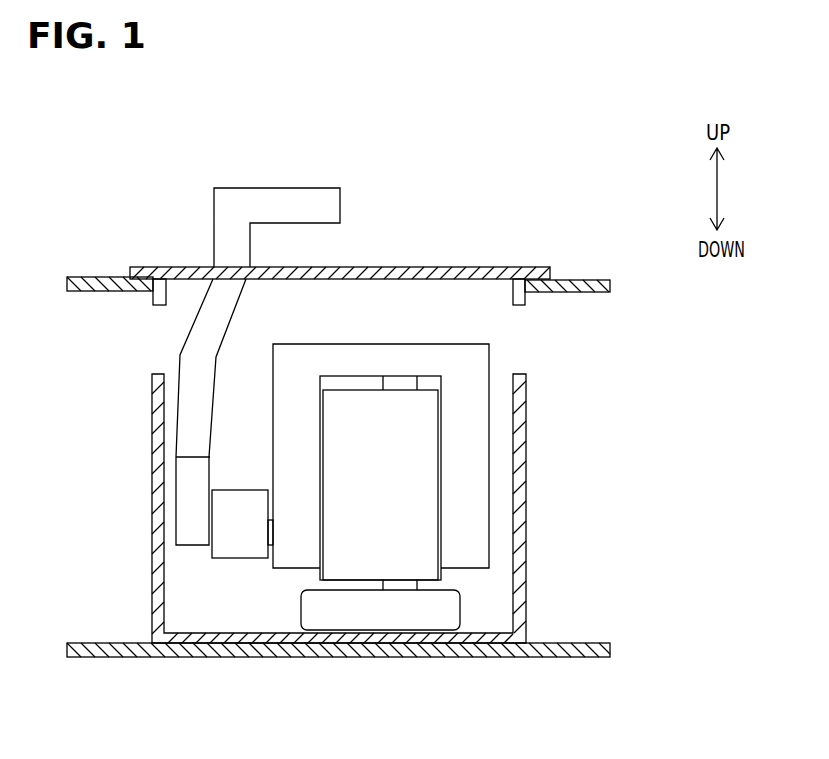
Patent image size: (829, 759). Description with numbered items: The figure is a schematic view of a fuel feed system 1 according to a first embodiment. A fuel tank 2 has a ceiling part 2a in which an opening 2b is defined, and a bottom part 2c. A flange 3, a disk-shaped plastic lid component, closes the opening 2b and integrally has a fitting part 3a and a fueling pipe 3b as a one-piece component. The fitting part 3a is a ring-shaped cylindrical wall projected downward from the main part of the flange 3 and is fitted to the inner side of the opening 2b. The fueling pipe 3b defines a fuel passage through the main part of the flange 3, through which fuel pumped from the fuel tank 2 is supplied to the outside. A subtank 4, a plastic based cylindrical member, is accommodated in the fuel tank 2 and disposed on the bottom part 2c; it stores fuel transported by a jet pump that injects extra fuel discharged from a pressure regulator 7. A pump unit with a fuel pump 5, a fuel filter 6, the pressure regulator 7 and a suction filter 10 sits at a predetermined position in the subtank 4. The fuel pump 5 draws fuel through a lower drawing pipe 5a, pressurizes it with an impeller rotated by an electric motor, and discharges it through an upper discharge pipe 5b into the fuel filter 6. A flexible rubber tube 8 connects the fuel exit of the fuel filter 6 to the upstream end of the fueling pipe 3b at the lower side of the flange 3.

The fuel feed system 1 is at (454, 178).
The fuel tank 2 is at (605, 273).
The ceiling part 2a is at (568, 283).
The opening 2b is at (521, 290).
The bottom part 2c is at (553, 658).
The flange 3 is at (436, 267).
The fitting part 3a is at (180, 288).
The fueling pipe 3b is at (302, 208).
The subtank 4 is at (157, 596).
The fuel pump 5 is at (420, 487).
The drawing pipe 5a is at (403, 587).
The discharge pipe 5b is at (407, 385).
The fuel filter 6 is at (472, 433).
The pressure regulator 7 is at (228, 535).
The tube 8 is at (196, 352).
The suction filter 10 is at (387, 617).